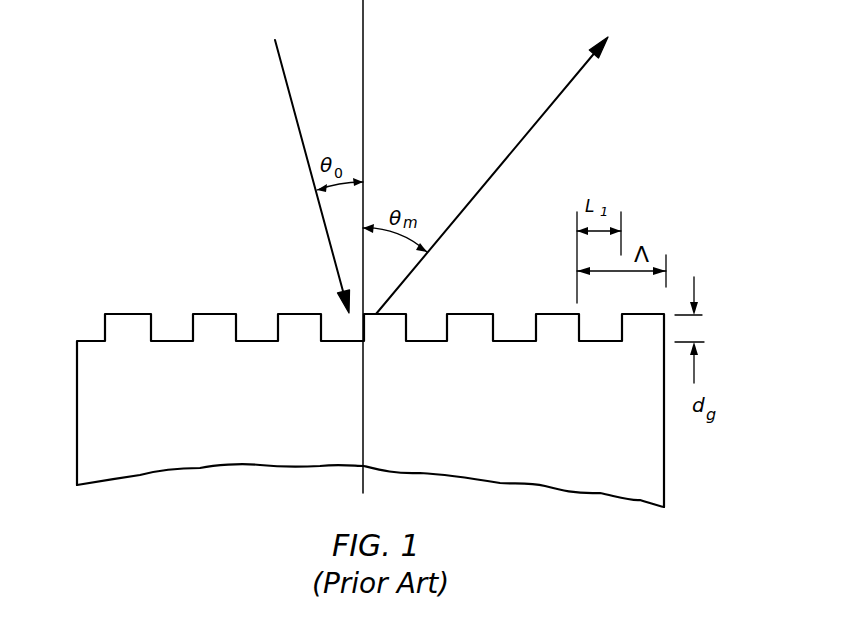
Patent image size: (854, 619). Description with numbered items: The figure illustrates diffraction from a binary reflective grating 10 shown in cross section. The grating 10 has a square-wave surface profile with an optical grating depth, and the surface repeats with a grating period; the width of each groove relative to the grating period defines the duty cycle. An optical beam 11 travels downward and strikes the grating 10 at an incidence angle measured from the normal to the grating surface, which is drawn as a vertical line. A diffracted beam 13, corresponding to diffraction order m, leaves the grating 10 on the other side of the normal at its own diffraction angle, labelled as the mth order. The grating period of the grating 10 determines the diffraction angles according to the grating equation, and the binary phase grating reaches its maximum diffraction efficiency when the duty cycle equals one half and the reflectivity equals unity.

The reflective grating 10 is at (97, 350).
The optical beam 11 is at (290, 100).
The diffracted beam 13 is at (548, 106).